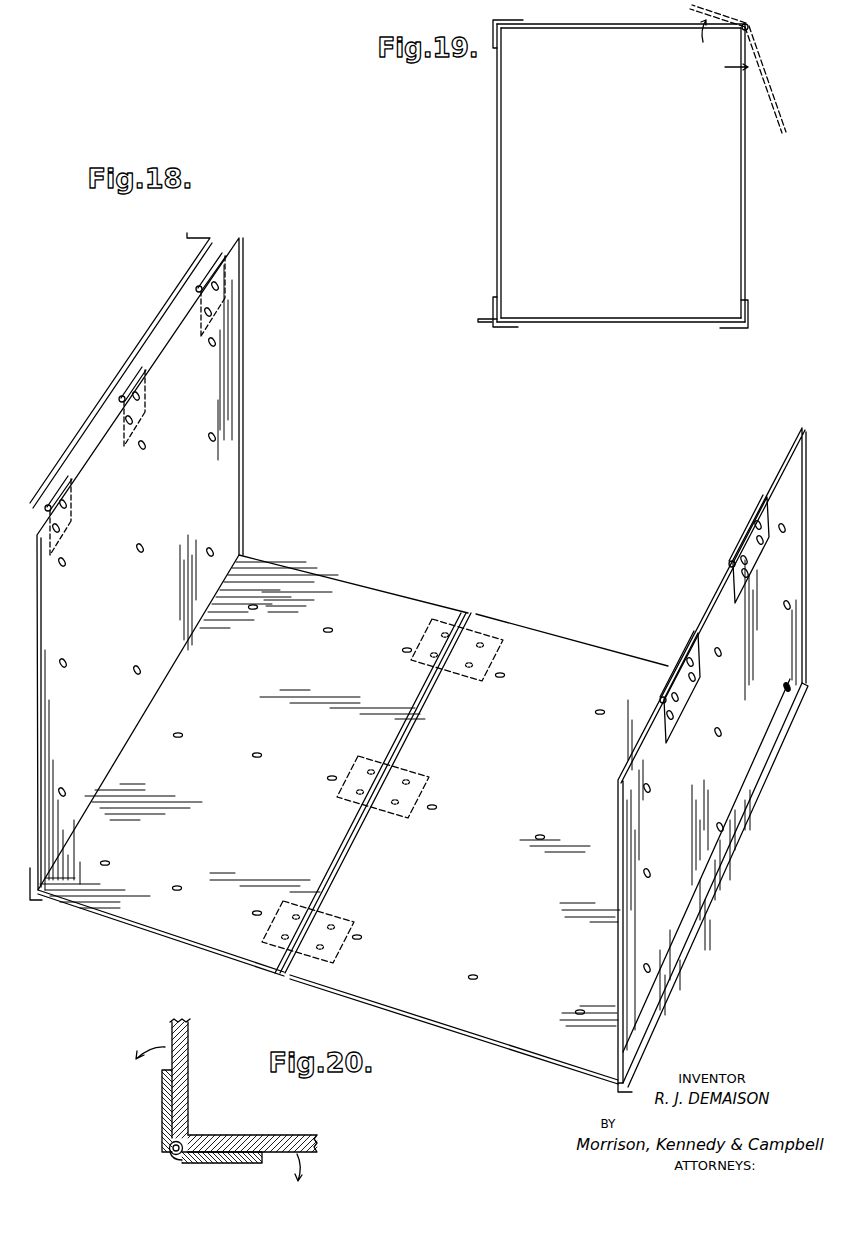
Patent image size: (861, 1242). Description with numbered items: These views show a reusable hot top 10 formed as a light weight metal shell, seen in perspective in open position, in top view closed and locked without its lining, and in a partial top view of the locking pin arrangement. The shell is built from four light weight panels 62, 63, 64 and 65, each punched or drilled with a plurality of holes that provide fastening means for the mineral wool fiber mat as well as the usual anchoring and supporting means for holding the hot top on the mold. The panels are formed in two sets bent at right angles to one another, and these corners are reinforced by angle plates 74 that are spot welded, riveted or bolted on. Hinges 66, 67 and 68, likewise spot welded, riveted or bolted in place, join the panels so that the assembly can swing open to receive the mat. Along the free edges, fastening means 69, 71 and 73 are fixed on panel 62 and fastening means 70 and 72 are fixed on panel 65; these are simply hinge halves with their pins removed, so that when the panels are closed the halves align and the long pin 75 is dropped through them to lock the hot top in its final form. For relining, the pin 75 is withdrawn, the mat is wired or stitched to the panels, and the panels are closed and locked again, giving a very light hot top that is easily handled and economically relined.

In FIG. 19, the container assembly 10 is at (614, 158).
In FIG. 18, the panel 62 is at (149, 507).
In FIG. 19, the panel 62 is at (606, 318).
In FIG. 20, the panel 62 is at (232, 1135).
In FIG. 18, the panel 63 is at (266, 723).
In FIG. 19, the panel 63 is at (746, 186).
In FIG. 18, the panel 64 is at (534, 810).
In FIG. 19, the panel 64 is at (624, 26).
In FIG. 18, the panel 65 is at (702, 780).
In FIG. 19, the panel 65 is at (503, 150).
In FIG. 20, the panel 65 is at (190, 1030).
In FIG. 18, the hinge 66 is at (356, 916).
In FIG. 18, the hinge 67 is at (433, 777).
In FIG. 18, the hinge 68 is at (494, 657).
In FIG. 18, the fastening means 69 is at (214, 272).
In FIG. 20, the fastening means 69 is at (238, 1164).
In FIG. 18, the fastening means 70 is at (748, 515).
In FIG. 20, the fastening means 70 is at (162, 1090).
In FIG. 18, the fastening means 71 is at (136, 393).
In FIG. 18, the fastening means 72 is at (680, 650).
In FIG. 18, the fastening means 73 is at (62, 498).
In FIG. 18, the angle plate 74 is at (716, 886).
In FIG. 19, the angle plate 74 is at (501, 21).
In FIG. 18, the long pin 75 is at (198, 235).
In FIG. 19, the long pin 75 is at (486, 326).
In FIG. 20, the long pin 75 is at (166, 1154).